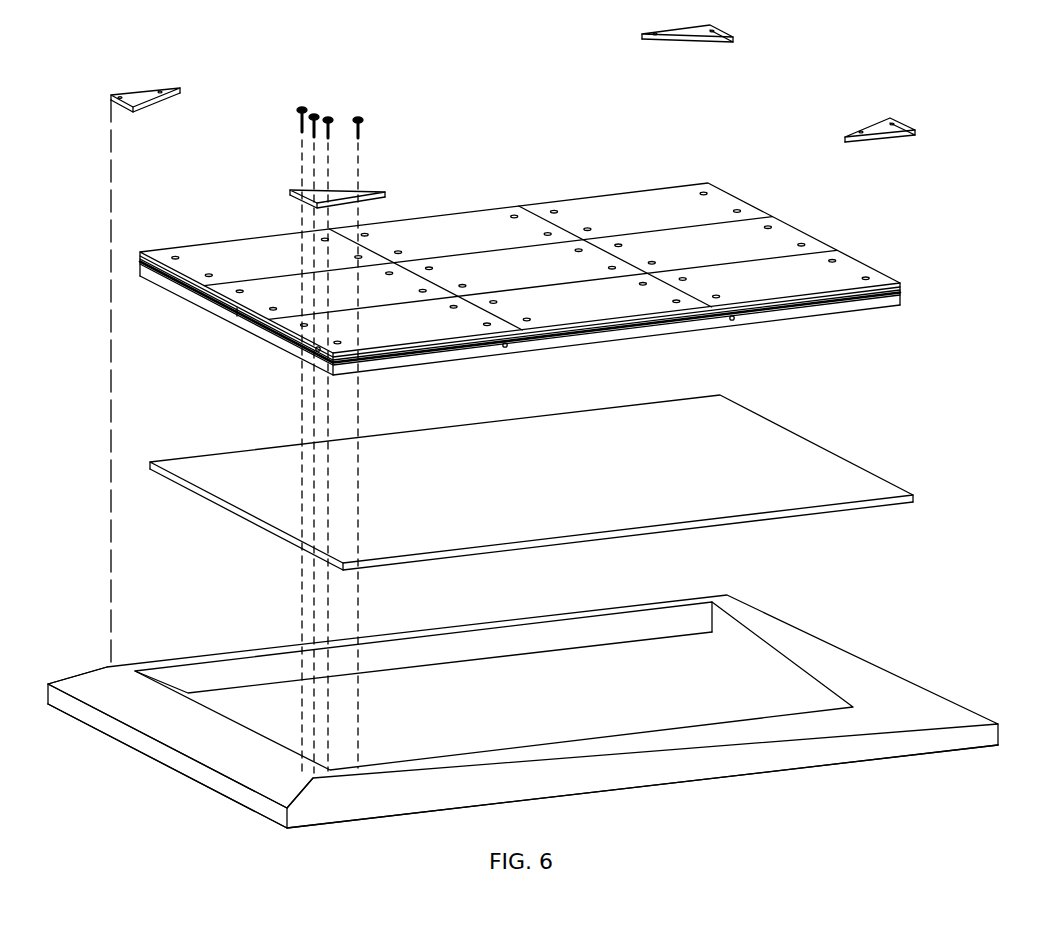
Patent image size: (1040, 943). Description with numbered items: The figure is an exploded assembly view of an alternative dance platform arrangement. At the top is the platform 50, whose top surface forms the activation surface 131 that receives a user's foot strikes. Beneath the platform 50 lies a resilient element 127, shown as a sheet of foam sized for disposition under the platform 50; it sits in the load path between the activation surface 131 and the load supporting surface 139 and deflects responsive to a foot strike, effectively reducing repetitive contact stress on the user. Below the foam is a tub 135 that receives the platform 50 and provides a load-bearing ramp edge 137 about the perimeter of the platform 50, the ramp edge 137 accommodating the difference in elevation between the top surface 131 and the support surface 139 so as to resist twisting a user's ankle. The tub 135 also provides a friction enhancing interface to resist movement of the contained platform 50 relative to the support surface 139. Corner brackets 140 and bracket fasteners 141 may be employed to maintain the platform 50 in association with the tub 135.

The platform 50 is at (921, 237).
The activation surface 131 is at (822, 222).
The resilient element 127 is at (810, 480).
The tub 135 is at (950, 698).
The ramp edge 137 is at (160, 712).
The load supporting surface 139 is at (858, 822).
The corner bracket 140 is at (880, 125).
The bracket fasteners 141 is at (287, 97).